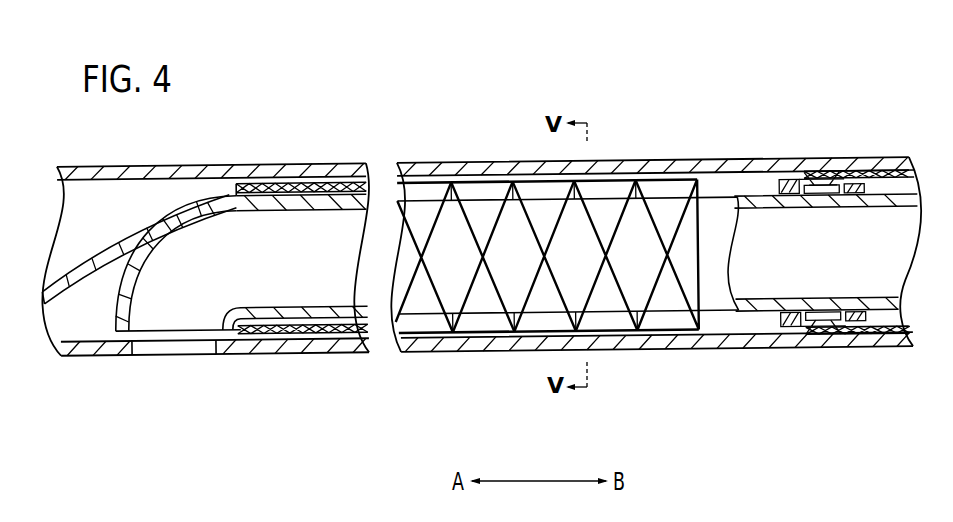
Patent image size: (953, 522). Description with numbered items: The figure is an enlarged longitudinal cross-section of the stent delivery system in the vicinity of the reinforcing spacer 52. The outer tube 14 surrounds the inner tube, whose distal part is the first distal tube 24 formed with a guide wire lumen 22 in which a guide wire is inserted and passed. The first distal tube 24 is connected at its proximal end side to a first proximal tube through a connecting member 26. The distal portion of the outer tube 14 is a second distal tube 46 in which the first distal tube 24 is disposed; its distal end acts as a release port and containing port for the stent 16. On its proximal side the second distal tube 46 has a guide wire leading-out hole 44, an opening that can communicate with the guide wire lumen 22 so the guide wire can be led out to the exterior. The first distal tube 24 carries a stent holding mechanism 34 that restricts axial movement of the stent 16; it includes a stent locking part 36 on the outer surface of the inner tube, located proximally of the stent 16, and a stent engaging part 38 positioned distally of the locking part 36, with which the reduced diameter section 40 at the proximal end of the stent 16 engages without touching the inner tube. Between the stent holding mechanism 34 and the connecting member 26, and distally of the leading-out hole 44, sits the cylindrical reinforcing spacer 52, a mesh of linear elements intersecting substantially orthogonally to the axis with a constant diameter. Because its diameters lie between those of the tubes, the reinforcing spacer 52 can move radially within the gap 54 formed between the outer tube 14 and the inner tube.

The outer tube 14 is at (887, 152).
The stent 16 is at (878, 349).
The guide wire lumen 22 is at (896, 252).
The first distal tube 24 is at (754, 316).
The connecting member 26 is at (90, 268).
The stent holding mechanism 34 is at (777, 179).
The stent locking part 36 is at (788, 198).
The stent engaging part 38 is at (848, 198).
The reduced diameter section 40 is at (820, 316).
The guide wire leading-out hole 44 is at (183, 347).
The second distal tube 46 is at (660, 338).
The reinforcing spacer 52 is at (482, 178).
The gap 54 is at (482, 335).